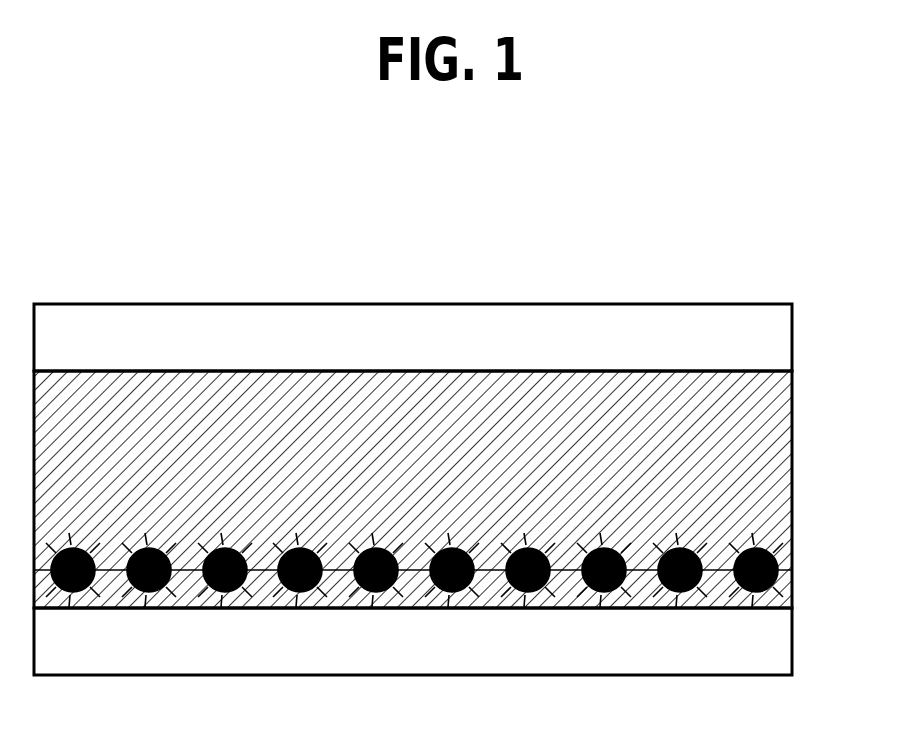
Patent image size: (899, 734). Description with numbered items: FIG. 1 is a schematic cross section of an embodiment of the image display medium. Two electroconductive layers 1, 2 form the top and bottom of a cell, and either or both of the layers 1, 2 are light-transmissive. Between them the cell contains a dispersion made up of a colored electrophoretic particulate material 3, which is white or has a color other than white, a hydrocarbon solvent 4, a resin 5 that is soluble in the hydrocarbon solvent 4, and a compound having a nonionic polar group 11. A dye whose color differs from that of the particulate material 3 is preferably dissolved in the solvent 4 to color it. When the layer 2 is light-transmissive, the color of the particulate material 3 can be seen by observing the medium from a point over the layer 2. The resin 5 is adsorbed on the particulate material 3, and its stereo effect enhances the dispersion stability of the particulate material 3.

The electroconductive layer 1 is at (778, 642).
The electroconductive layer 2 is at (766, 337).
The colored electrophoretic particulate material 3 is at (781, 562).
The hydrocarbon solvent 4 is at (768, 408).
The resin 5 is at (770, 458).
The compound having a nonionic polar group 11 is at (770, 500).